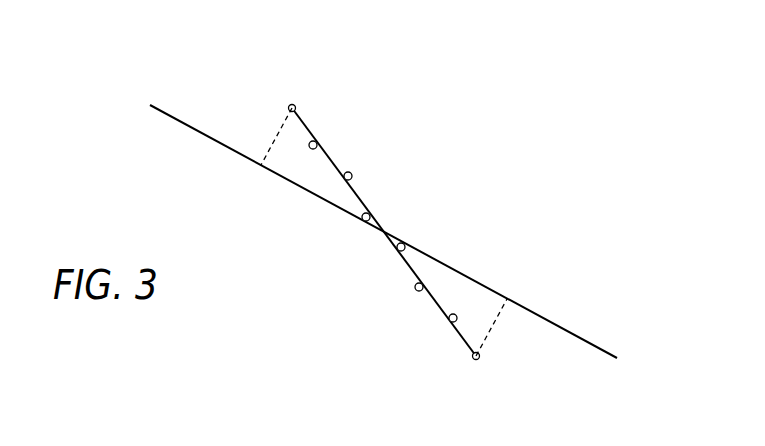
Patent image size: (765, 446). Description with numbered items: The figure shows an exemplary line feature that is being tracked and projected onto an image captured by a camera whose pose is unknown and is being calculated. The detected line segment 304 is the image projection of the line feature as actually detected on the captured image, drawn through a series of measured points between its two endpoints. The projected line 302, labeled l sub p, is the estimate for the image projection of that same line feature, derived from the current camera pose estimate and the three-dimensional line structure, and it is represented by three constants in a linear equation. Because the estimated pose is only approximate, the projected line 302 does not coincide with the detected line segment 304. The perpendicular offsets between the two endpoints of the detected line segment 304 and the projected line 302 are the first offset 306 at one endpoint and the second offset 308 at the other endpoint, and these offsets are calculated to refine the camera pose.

The projected line 302 is at (176, 118).
The detected line segment 304 is at (303, 122).
The offset h1 306 is at (274, 137).
The offset h2 308 is at (492, 325).